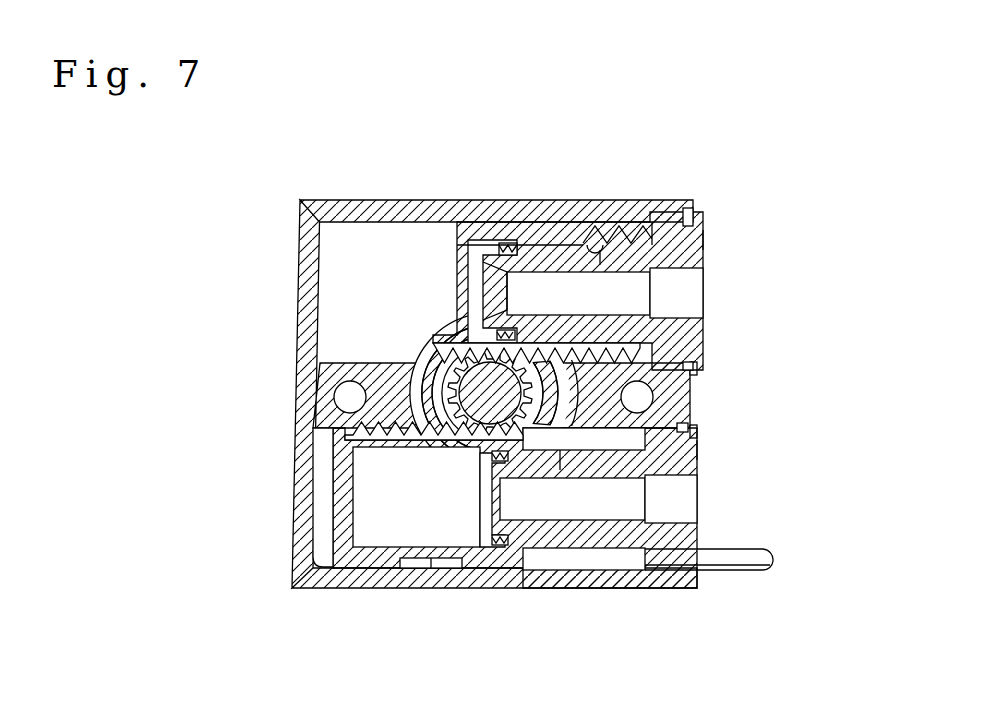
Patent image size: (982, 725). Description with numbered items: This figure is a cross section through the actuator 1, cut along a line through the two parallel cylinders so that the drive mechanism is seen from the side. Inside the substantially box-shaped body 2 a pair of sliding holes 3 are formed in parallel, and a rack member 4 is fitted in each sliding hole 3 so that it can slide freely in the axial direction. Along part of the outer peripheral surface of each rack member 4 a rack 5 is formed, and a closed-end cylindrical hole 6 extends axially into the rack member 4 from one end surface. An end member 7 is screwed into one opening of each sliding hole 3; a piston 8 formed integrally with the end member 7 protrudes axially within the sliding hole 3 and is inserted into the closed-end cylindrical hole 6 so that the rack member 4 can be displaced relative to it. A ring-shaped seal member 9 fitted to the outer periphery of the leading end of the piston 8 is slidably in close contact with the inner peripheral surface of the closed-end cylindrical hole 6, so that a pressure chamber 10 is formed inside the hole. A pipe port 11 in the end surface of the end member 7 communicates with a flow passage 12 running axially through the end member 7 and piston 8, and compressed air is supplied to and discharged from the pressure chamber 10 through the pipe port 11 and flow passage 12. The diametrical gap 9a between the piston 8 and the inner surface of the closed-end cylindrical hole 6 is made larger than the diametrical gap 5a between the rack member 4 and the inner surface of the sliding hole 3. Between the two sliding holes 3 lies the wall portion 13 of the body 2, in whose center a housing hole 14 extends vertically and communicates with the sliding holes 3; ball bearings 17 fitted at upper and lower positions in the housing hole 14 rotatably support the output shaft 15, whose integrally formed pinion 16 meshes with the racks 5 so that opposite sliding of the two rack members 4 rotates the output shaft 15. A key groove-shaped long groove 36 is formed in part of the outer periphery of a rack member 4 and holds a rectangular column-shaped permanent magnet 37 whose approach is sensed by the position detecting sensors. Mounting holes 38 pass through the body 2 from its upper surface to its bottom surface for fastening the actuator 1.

The actuator 1 is at (315, 151).
The body 2 is at (677, 212).
The sliding hole 3 is at (425, 247).
The rack member 4 is at (453, 298).
The rack 5 is at (568, 337).
The gap 5a is at (513, 243).
The closed-end cylindrical hole 6 is at (594, 244).
The end member 7 is at (697, 242).
The piston 8 is at (620, 235).
The seal member 9 is at (510, 240).
The gap 9a is at (547, 242).
The pressure chamber 10 is at (475, 258).
The pipe port 11 is at (690, 292).
The flow passage 12 is at (528, 292).
The wall portion 13 is at (395, 378).
The housing hole 14 is at (440, 360).
The output shaft 15 is at (556, 402).
The pinion 16 is at (680, 588).
The ball bearing 17 is at (647, 477).
The long groove 36 is at (428, 565).
The permanent magnet 37 is at (447, 562).
The mounting hole 38 is at (335, 388).